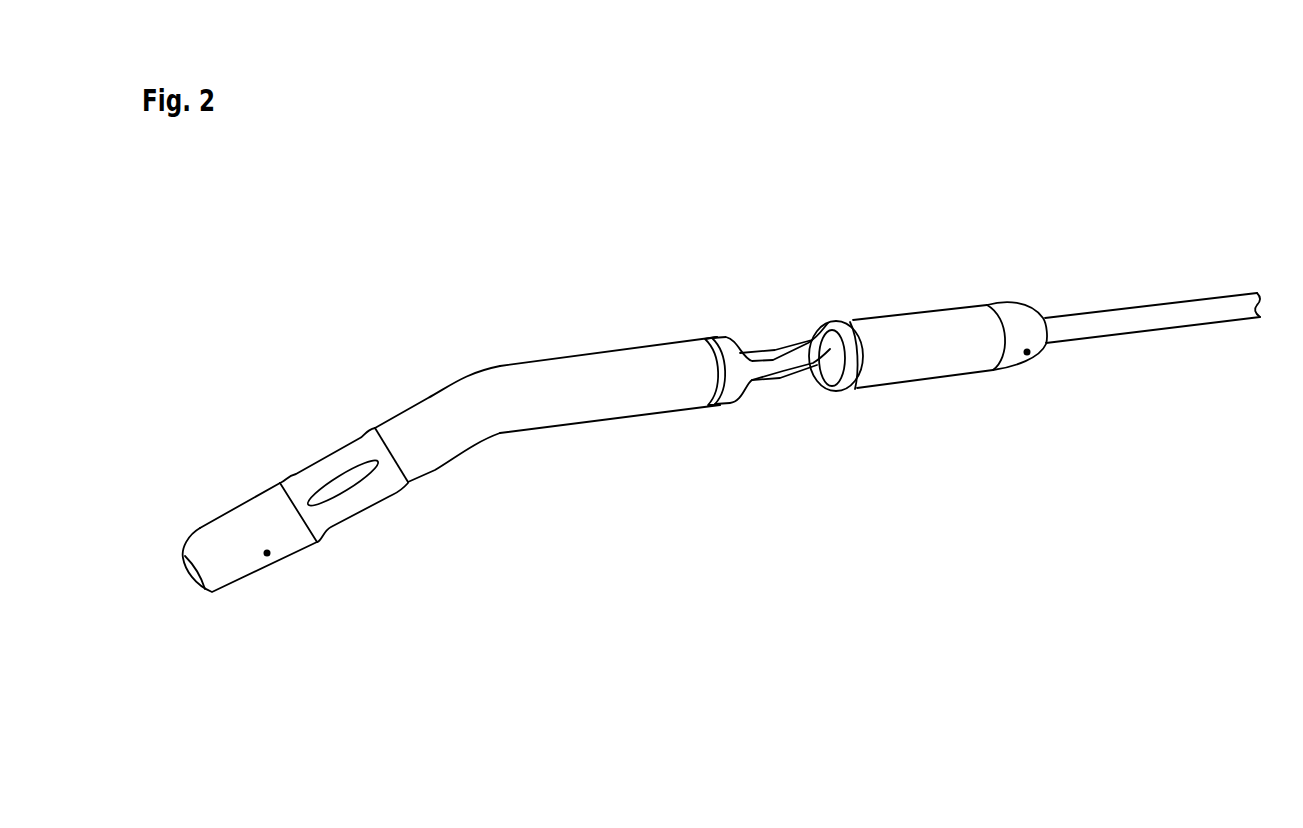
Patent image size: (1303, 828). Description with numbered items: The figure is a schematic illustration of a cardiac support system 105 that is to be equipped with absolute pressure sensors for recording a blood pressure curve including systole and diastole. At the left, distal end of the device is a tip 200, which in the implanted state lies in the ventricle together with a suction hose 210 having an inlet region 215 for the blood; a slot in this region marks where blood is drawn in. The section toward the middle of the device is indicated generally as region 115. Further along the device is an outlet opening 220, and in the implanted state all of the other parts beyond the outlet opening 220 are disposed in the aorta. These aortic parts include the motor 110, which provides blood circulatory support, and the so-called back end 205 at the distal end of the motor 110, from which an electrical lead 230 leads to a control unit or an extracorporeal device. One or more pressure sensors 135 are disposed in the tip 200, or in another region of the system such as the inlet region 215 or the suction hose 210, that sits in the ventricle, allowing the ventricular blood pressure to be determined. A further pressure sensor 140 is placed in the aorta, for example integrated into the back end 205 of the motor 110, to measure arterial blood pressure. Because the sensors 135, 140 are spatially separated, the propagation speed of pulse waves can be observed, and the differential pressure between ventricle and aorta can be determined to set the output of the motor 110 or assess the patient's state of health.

The cardiac support system 105 is at (553, 492).
The motor 110 is at (952, 335).
The distal section 115 is at (578, 293).
The pressure sensor 135 is at (267, 553).
The further pressure sensor 140 is at (1027, 352).
The tip 200 is at (220, 533).
The back end 205 is at (1033, 328).
The suction hose 210 is at (457, 405).
The inlet region 215 is at (342, 458).
The outlet opening 220 is at (777, 350).
The electrical lead 230 is at (1197, 308).